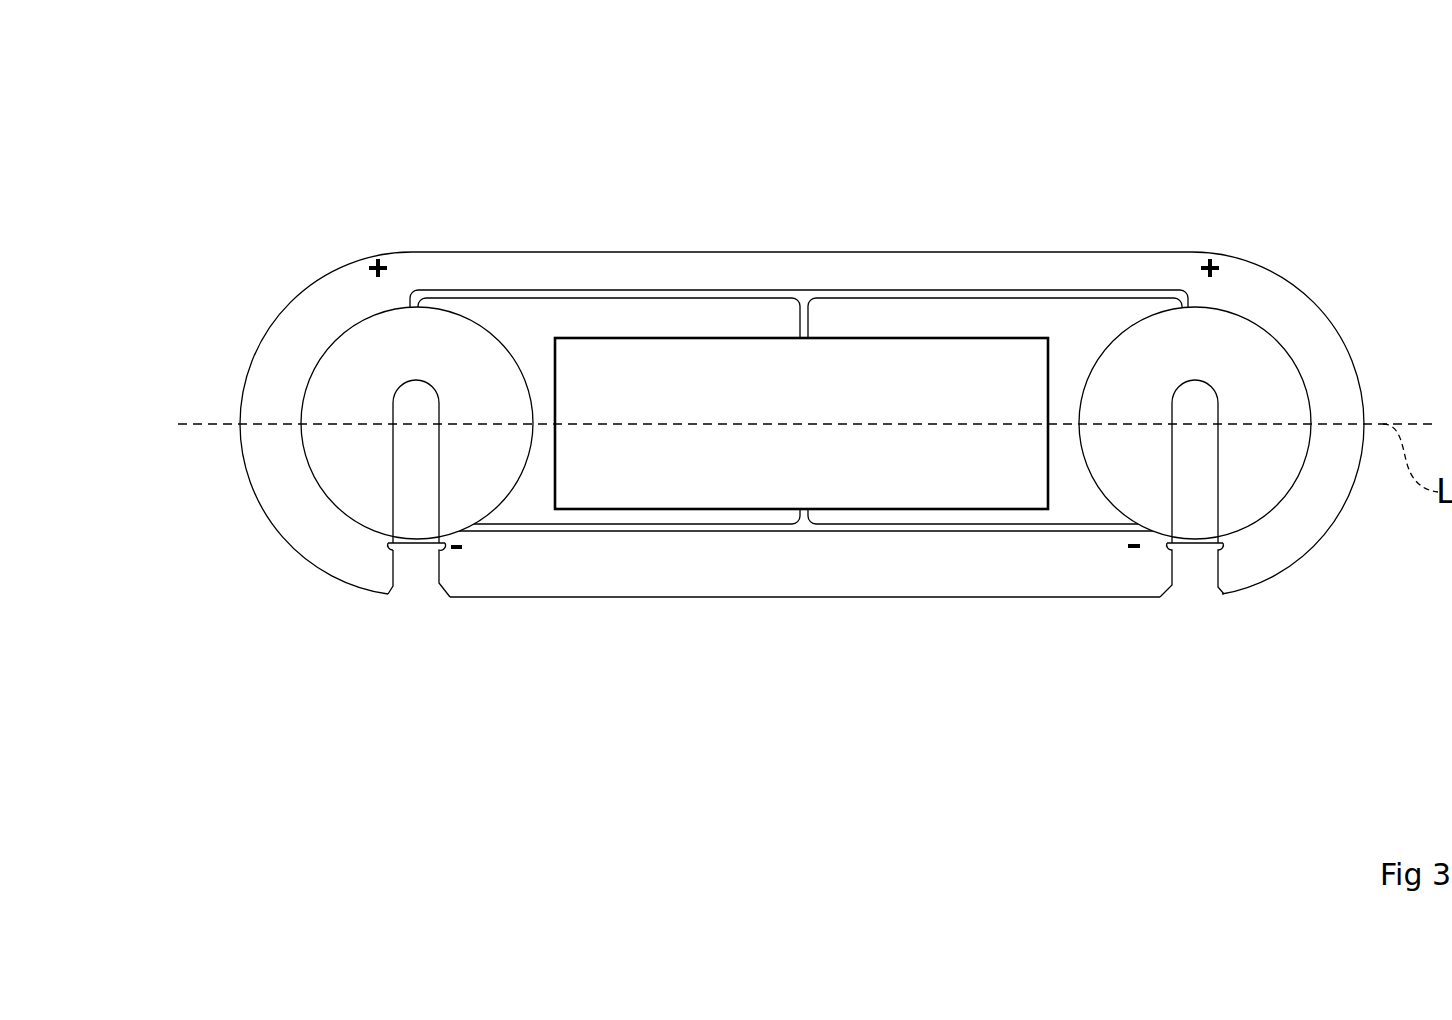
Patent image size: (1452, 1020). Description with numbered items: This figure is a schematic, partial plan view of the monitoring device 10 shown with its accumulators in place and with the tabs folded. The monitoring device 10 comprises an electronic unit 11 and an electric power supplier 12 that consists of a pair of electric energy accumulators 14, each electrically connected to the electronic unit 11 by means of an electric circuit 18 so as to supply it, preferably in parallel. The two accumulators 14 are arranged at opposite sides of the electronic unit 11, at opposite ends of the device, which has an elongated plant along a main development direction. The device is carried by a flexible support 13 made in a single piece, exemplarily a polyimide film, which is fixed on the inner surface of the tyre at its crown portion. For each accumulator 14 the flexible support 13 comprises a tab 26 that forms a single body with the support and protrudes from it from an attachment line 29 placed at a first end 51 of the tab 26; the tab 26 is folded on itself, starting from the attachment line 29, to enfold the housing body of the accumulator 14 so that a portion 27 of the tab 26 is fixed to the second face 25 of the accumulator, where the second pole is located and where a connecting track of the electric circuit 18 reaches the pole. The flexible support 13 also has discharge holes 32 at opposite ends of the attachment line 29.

The monitoring device 10 is at (250, 135).
The electronic unit 11 is at (820, 467).
The electric power supplier 12 is at (1298, 342).
The flexible support 13 is at (335, 562).
The accumulator 14 is at (765, 388).
The electric circuit 18 is at (932, 273).
The second face 25 is at (424, 355).
The tab 26 is at (790, 599).
The portion 27 is at (416, 497).
The attachment line 29 is at (433, 545).
The discharge holes 32 is at (387, 550).
The first end 51 is at (1200, 552).